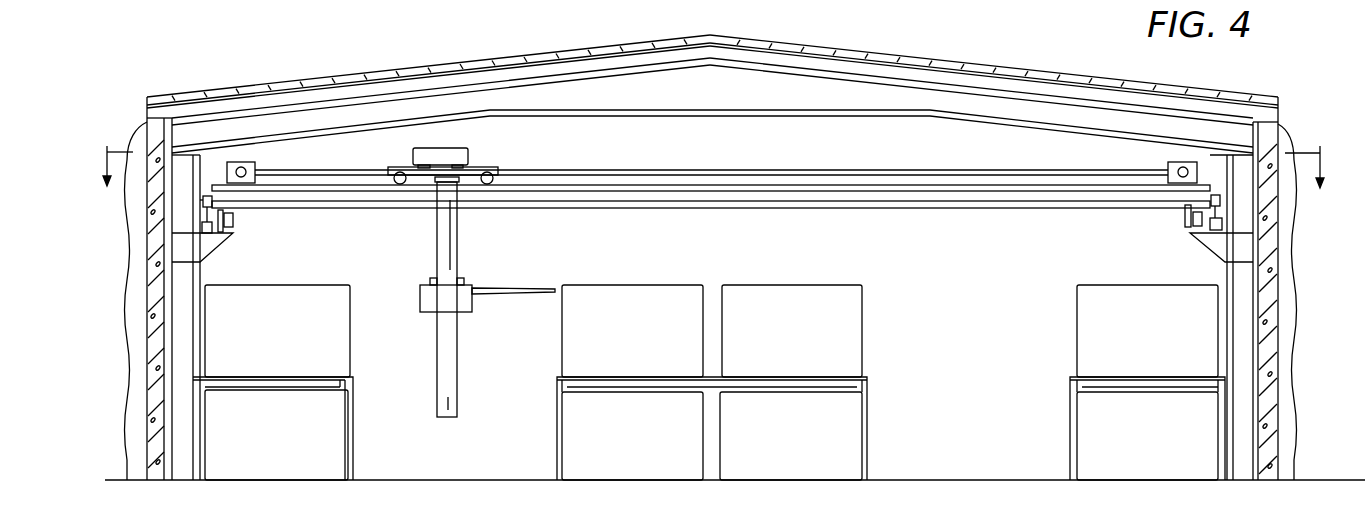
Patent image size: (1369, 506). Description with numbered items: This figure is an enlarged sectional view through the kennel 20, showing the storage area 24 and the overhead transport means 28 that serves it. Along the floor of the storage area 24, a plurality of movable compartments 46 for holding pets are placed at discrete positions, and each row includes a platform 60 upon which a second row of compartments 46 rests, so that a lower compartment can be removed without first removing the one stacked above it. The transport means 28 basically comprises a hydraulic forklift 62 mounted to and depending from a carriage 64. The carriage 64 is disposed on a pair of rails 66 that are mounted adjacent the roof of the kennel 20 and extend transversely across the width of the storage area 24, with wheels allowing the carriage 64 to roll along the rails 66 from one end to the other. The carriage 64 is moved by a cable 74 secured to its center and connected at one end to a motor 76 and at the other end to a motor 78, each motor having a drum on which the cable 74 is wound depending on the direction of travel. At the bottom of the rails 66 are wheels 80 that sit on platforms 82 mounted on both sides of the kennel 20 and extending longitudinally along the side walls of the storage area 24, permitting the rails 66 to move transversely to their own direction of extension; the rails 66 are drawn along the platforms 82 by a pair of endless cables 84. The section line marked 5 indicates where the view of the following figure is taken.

The kennel 20 is at (1302, 263).
The storage area 24 is at (986, 389).
The transport means 28 is at (466, 225).
The movable compartments 46 is at (350, 330).
The platform 60 is at (352, 380).
The hydraulic forklift 62 is at (437, 267).
The carriage 64 is at (476, 170).
The rails 66 is at (595, 208).
The cable 74 is at (333, 171).
The motor 76 is at (257, 163).
The motor 78 is at (1168, 164).
The wheels 80 is at (233, 224).
The platforms 82 is at (222, 238).
The endless cables 84 is at (202, 200).
The section line 5- 5 is at (713, 181).